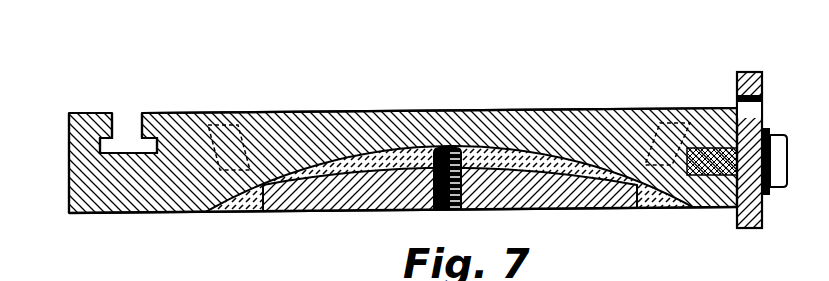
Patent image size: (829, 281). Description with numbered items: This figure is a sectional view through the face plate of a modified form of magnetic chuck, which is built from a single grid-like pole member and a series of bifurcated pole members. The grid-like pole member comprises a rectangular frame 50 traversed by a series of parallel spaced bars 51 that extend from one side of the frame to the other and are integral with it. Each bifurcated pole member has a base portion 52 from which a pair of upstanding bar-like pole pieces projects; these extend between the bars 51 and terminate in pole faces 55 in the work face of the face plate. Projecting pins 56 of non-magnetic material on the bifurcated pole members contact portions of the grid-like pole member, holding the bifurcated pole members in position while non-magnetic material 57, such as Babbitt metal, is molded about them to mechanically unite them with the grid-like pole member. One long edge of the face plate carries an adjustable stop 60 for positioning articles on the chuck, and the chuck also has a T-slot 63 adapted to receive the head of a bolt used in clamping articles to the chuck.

The rectangular frame 50 is at (768, 130).
The parallel spaced bars 51 is at (416, 122).
The base portion 52 is at (365, 195).
The pole faces 55 is at (278, 112).
The projecting pins 56 is at (212, 125).
The non-magnetic material 57 is at (246, 214).
The adjustable stop 60 is at (762, 80).
The T-slot 63 is at (131, 120).